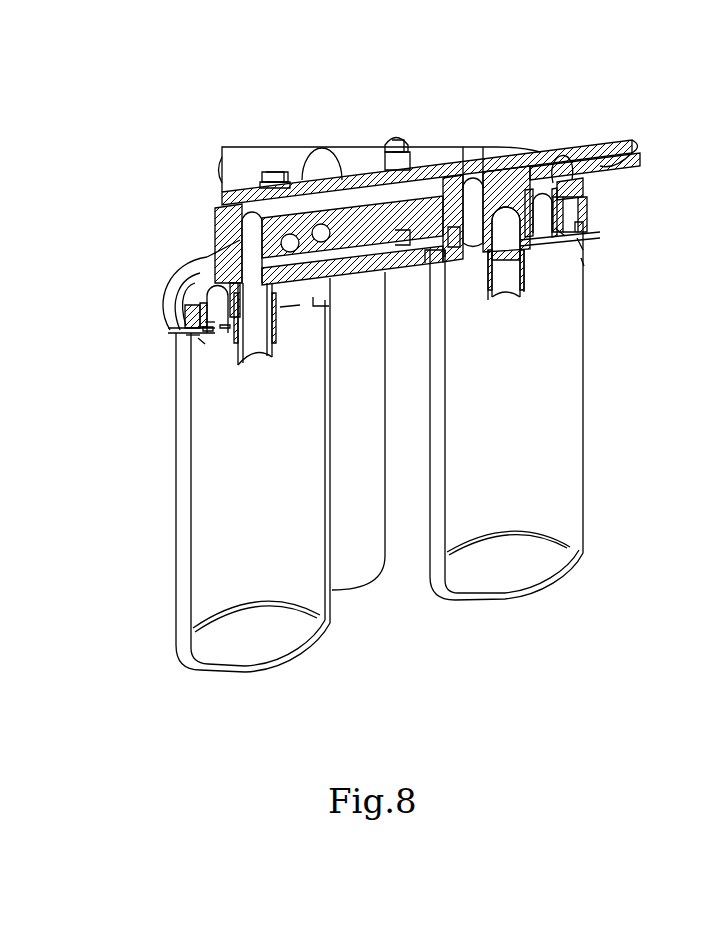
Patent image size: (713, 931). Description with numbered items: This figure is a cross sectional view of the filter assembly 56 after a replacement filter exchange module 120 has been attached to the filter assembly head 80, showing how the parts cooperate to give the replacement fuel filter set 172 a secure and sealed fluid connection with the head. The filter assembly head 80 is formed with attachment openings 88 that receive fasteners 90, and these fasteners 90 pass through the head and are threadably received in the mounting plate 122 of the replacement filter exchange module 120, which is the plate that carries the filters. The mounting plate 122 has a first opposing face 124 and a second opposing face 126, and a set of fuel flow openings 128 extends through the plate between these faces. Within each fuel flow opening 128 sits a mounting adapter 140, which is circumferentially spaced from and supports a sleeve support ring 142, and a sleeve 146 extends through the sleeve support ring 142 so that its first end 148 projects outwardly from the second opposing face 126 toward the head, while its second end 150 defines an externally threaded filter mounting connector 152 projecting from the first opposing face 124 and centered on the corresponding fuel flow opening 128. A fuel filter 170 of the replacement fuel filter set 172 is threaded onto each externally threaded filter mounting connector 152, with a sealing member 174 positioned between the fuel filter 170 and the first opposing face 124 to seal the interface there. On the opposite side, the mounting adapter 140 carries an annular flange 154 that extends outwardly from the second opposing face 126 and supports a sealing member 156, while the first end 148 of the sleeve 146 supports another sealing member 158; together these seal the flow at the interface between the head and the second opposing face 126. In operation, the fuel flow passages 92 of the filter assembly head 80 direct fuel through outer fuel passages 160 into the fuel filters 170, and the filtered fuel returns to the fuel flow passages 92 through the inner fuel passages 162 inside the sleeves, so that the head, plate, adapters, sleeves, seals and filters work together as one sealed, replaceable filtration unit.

The filter assembly 56 is at (544, 88).
The filter assembly head 80 is at (448, 147).
The attachment openings 88 is at (264, 170).
The fasteners 90 is at (274, 172).
The fuel flow passages 92 is at (358, 198).
The replacement filter exchange module 120 is at (628, 232).
The mounting plate 122 is at (578, 222).
The first opposing face 124 is at (398, 272).
The second opposing face 126 is at (400, 244).
The fuel flow openings 128 is at (212, 324).
The mounting adapter 140 is at (170, 333).
The sleeve support ring 142 is at (200, 340).
The sleeve 146 is at (205, 344).
The first end 148 is at (222, 284).
The annular flange 154 is at (183, 313).
The sealing member 156 is at (622, 157).
The sealing member 158 is at (228, 272).
The outer fuel passages 160 is at (238, 220).
The inner fuel passages 162 is at (212, 240).
The second end 150 is at (240, 372).
The externally threaded filter mounting connector 152 is at (262, 368).
The fuel filter 170 is at (176, 520).
The replacement fuel filter set 172 is at (440, 632).
The sealing member 174 is at (307, 316).